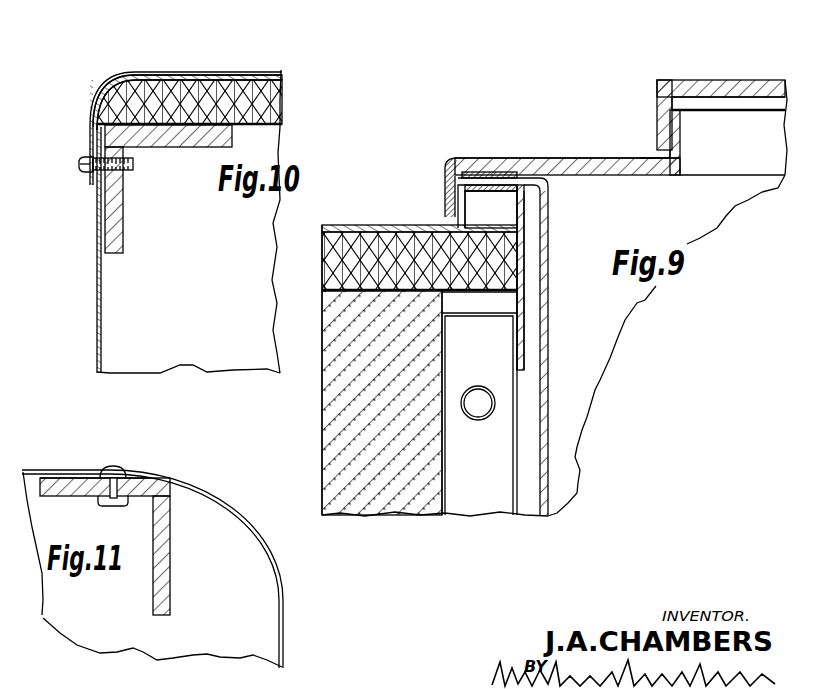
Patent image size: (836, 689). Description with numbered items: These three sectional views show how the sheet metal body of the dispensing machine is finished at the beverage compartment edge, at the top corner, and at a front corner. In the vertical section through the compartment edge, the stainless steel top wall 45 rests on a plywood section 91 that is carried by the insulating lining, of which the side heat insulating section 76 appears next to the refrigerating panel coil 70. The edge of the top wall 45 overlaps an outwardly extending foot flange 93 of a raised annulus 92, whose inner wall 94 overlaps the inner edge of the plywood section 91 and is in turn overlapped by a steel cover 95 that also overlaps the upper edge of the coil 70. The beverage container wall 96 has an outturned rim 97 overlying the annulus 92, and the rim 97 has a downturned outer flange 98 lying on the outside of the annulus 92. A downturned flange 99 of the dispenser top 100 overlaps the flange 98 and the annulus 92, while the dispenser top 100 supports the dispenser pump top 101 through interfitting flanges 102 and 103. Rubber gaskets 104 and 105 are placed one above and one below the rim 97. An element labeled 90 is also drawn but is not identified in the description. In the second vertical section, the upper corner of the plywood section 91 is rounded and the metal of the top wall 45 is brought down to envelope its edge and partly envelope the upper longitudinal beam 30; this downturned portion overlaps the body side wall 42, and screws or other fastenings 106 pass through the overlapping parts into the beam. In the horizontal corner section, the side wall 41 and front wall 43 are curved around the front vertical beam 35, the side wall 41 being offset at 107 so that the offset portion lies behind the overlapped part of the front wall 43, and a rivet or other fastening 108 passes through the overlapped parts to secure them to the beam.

In FIG. 10, the upper longitudinal beam 30 is at (118, 208).
In FIG. 11, the front vertical beam 35 is at (162, 528).
In FIG. 11, the side wall 41 is at (76, 470).
In FIG. 10, the side wall 42 is at (100, 272).
In FIG. 11, the front wall 43 is at (283, 616).
In FIG. 10, the top wall 45 is at (176, 72).
In FIG. 9, the top wall 45 is at (372, 226).
In FIG. 9, the panel coil 70 is at (492, 500).
In FIG. 9, the heat insulating section 76 is at (400, 508).
In FIG. 10, the panel edge 90 is at (280, 108).
In FIG. 9, the plywood section 91 is at (324, 258).
In FIG. 9, the raised annulus 92 is at (470, 196).
In FIG. 9, the foot flange 93 is at (430, 227).
In FIG. 9, the inner wall 94 is at (518, 220).
In FIG. 9, the steel cover 95 is at (527, 305).
In FIG. 9, the beverage container wall 96 is at (548, 325).
In FIG. 9, the outturned rim 97 is at (513, 172).
In FIG. 9, the downturned outer flange 98 is at (466, 212).
In FIG. 9, the downturned flange 99 is at (447, 190).
In FIG. 9, the dispenser top 100 is at (652, 158).
In FIG. 9, the dispenser pump top 101 is at (730, 90).
In FIG. 9, the interfitting flange 102 is at (662, 122).
In FIG. 9, the interfitting flange 103 is at (678, 158).
In FIG. 9, the rubber gasket 104 is at (485, 158).
In FIG. 9, the rubber gasket 105 is at (466, 174).
In FIG. 10, the screws 106 is at (88, 158).
In FIG. 11, the offset 107 is at (128, 472).
In FIG. 11, the rivet 108 is at (107, 502).